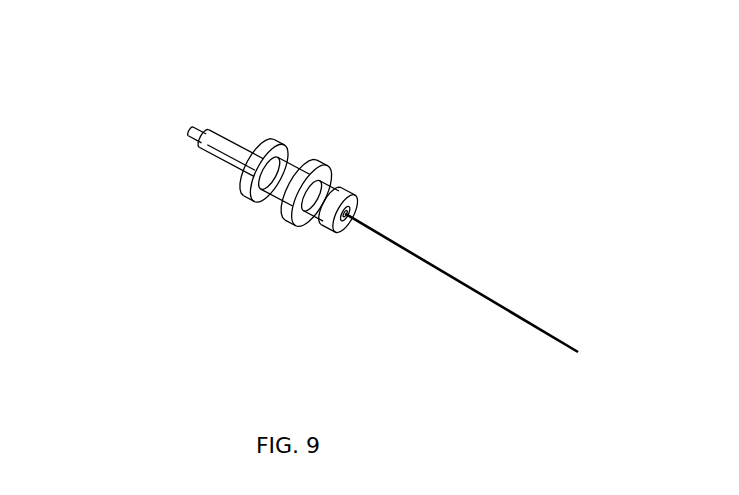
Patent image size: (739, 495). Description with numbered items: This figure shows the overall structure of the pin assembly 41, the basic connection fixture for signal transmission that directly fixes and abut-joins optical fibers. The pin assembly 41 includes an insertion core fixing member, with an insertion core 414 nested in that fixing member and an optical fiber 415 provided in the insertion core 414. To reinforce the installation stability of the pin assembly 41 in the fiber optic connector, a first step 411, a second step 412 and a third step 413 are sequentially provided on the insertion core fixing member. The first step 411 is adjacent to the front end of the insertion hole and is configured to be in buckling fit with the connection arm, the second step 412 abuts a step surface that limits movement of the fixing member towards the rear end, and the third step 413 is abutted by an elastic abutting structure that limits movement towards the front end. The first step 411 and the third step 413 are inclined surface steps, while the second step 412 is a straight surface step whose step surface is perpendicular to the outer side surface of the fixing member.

The pin assembly 41 is at (299, 145).
The first step 411 is at (252, 182).
The second step 412 is at (285, 214).
The third step 413 is at (326, 236).
The insertion core 414 is at (196, 134).
The optical fiber 415 is at (388, 238).